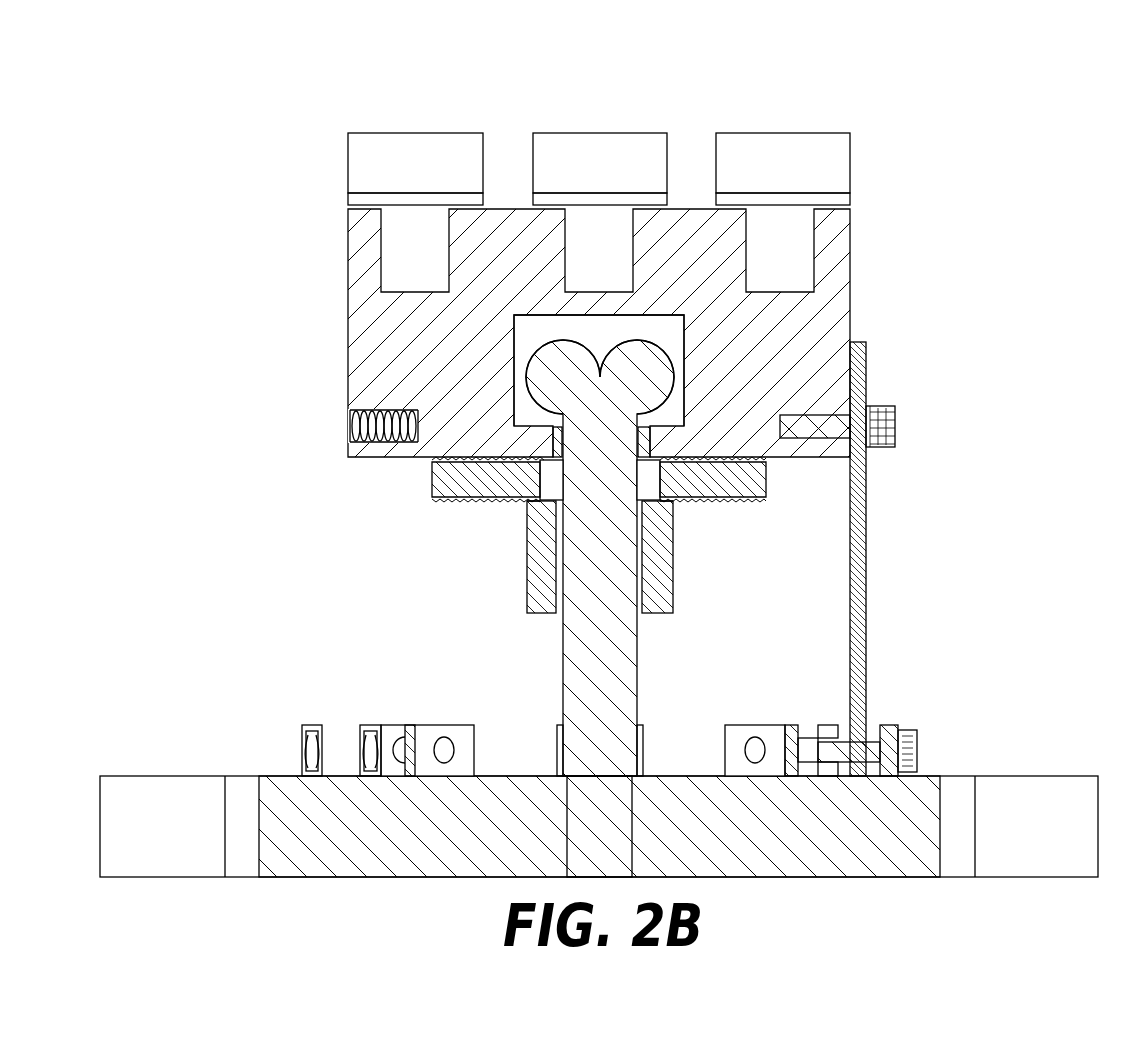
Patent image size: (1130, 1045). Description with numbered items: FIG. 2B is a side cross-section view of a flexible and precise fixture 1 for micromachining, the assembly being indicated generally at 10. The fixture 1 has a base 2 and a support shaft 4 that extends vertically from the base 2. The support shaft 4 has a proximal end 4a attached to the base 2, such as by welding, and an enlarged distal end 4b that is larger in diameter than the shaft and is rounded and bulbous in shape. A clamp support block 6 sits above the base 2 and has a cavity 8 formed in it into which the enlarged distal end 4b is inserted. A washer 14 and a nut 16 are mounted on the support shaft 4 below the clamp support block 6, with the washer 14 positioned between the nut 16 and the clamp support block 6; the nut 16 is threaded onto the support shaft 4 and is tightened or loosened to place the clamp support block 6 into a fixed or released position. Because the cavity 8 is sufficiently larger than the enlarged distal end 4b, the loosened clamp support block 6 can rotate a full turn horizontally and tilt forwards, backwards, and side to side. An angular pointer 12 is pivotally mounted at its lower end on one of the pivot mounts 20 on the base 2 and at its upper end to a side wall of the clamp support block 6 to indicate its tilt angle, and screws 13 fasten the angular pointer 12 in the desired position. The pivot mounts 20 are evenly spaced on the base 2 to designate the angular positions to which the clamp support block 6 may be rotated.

The flexible and precise fixture 1 is at (1046, 172).
The clamping assembly 10 is at (470, 90).
The base 2 is at (100, 800).
The support shaft 4 is at (480, 608).
The proximal end 4a is at (580, 848).
The enlarged distal end 4b is at (540, 366).
The clamp support block 6 is at (357, 300).
The cavity 8 is at (540, 333).
The angular pointer 12 is at (865, 550).
The screws 13 is at (880, 410).
The washer 14 is at (430, 477).
The nut 16 is at (530, 580).
The pivot mounts 20 is at (305, 725).